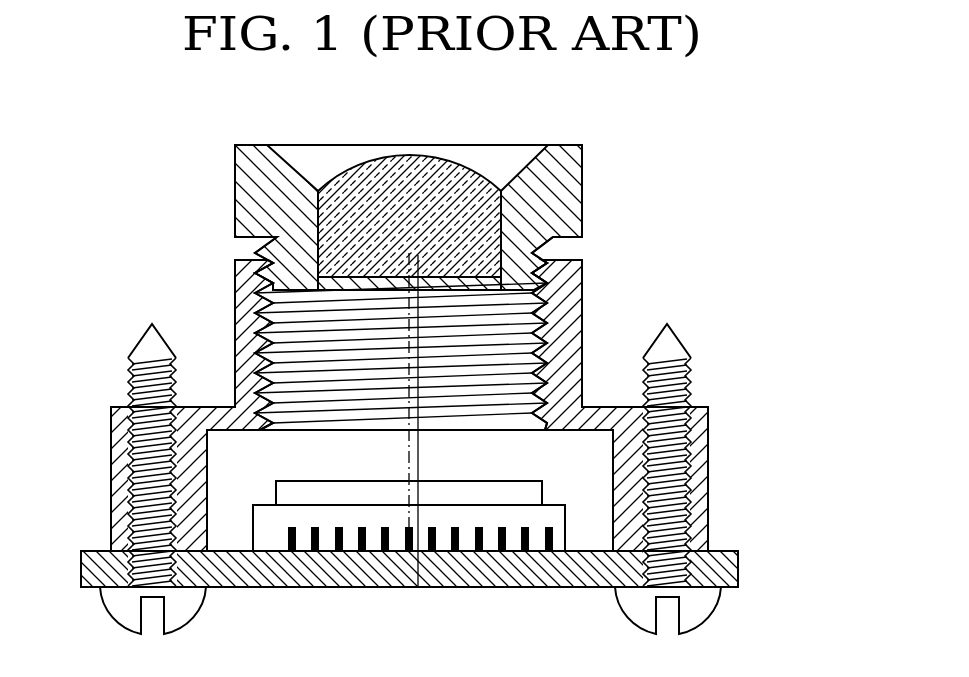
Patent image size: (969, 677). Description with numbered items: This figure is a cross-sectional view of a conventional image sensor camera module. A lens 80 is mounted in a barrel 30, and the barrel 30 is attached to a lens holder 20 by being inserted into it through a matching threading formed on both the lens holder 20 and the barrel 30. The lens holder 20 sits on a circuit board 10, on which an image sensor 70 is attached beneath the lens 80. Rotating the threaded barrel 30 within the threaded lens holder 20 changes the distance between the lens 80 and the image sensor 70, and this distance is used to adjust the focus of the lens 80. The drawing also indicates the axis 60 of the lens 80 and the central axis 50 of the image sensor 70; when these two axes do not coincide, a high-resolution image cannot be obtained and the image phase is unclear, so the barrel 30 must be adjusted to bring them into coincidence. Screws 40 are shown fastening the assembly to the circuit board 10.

The circuit board 10 is at (727, 568).
The lens holder 20 is at (573, 307).
The barrel 30 is at (573, 202).
The screw 40 is at (703, 608).
The central axis 50 is at (417, 492).
The axis 60 is at (410, 492).
The image sensor 70 is at (562, 551).
The lens 80 is at (410, 160).